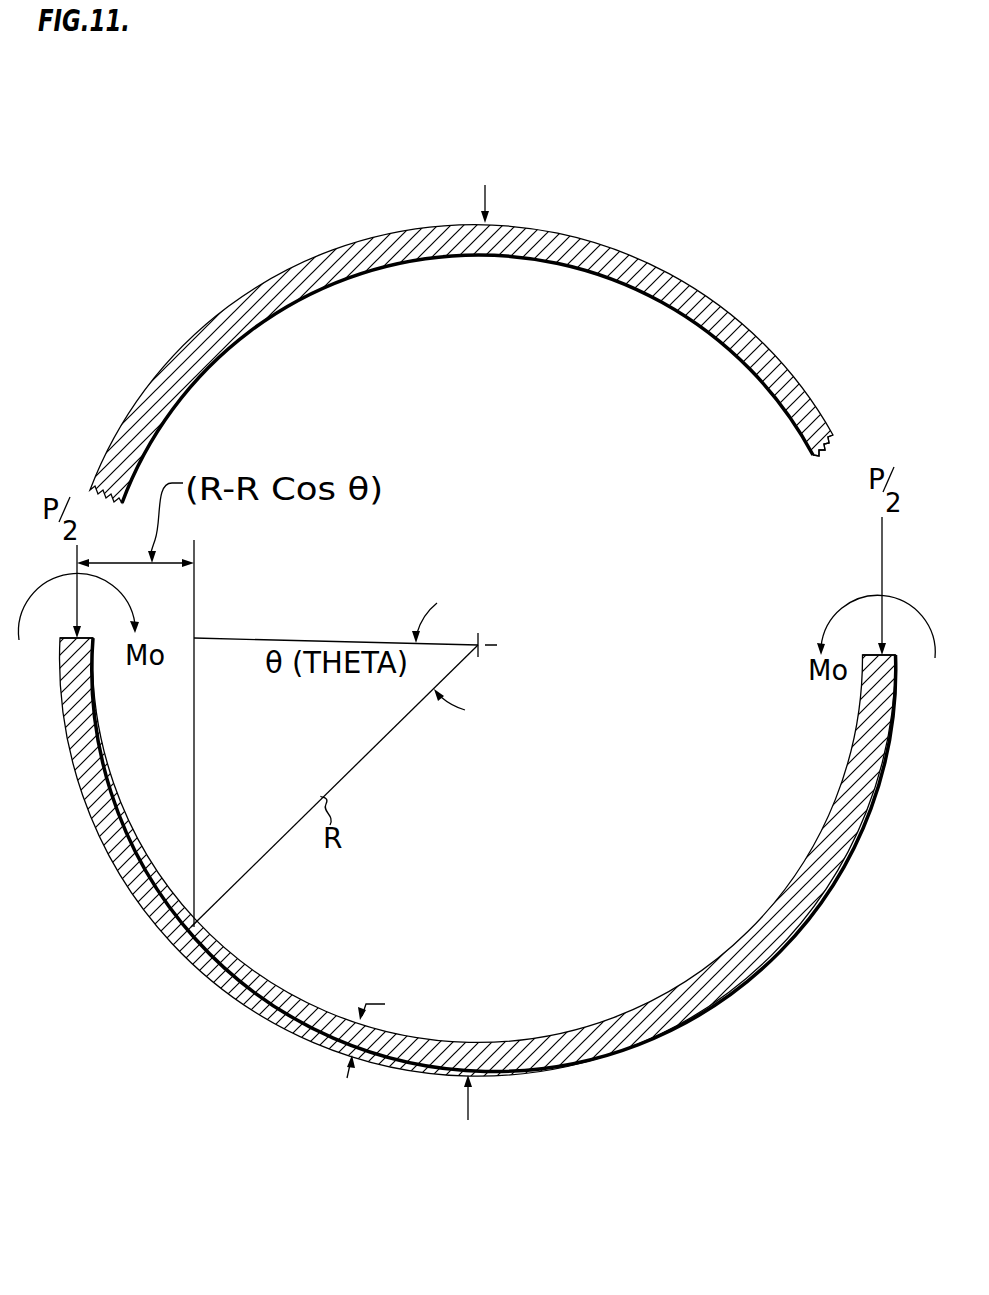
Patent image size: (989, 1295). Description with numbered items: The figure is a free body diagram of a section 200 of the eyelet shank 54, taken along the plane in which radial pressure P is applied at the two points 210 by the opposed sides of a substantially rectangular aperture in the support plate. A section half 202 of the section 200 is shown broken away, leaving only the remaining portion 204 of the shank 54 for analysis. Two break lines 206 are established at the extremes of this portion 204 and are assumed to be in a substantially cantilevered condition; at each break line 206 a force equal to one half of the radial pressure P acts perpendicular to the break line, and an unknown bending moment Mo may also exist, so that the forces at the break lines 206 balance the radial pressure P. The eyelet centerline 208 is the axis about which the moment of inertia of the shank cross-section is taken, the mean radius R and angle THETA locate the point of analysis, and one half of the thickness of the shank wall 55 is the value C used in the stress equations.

The shank 54 is at (658, 268).
The shank wall 55 is at (381, 1031).
The section 200 is at (476, 648).
The section half 202 is at (826, 420).
The remaining portion 204 is at (289, 984).
The break lines 206 is at (68, 628).
The eyelet centerline 208 is at (493, 644).
The points 210 is at (487, 223).